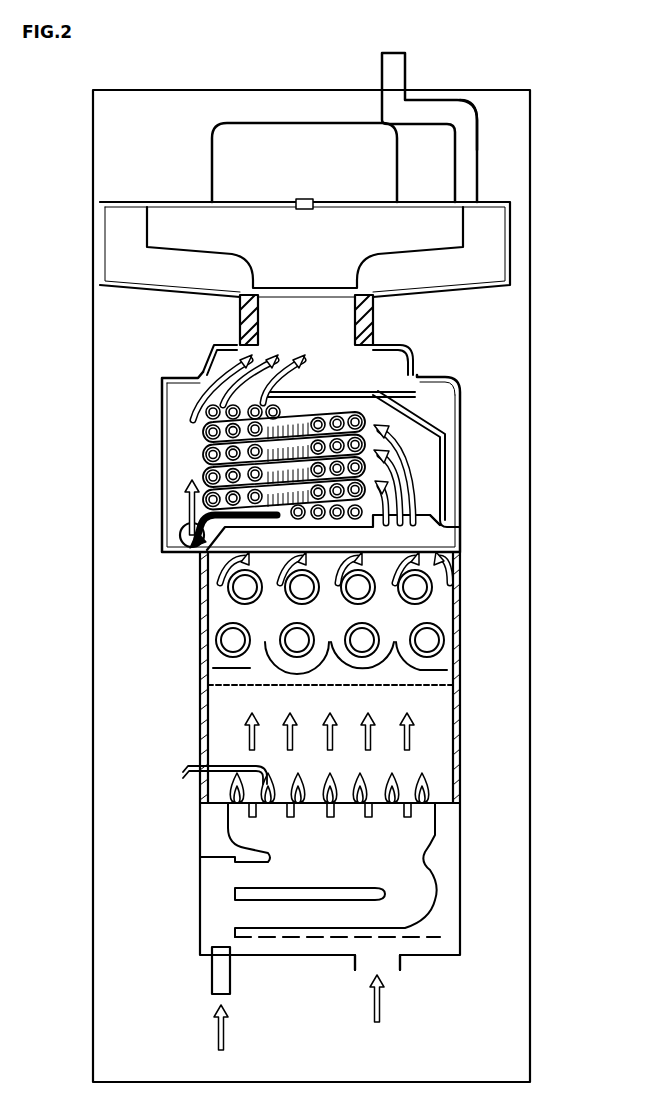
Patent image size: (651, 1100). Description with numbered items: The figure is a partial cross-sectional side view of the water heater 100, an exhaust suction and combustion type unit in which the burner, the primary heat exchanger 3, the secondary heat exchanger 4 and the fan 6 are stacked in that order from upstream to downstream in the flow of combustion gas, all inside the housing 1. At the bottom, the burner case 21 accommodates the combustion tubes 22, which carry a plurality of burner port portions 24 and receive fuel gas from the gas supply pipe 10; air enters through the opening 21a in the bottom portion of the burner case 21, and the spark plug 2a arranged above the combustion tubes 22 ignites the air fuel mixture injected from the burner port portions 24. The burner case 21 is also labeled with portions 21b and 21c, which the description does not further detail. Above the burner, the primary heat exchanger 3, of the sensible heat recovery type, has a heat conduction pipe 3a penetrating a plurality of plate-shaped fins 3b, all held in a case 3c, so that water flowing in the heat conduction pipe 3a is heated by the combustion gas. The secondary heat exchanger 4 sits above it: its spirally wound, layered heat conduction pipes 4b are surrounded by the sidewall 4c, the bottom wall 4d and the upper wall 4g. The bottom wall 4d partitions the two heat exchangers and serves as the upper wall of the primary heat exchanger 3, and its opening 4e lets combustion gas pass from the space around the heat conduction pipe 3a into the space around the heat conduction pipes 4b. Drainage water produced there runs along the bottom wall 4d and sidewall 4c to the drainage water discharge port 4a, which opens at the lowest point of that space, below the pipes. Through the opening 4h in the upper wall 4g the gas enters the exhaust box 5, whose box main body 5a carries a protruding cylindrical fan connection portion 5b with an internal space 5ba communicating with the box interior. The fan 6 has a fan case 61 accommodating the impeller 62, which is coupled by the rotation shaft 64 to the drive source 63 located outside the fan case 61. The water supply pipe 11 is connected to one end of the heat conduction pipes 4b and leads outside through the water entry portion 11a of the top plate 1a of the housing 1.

The water heater 100 is at (550, 208).
The housing 1 is at (530, 270).
The top plate 1a is at (469, 90).
The fan 6 is at (503, 197).
The fan case 61 is at (128, 200).
The impeller 62 is at (185, 228).
The drive source 63 is at (305, 147).
The rotation shaft 64 is at (302, 199).
The water supply pipe 11 is at (392, 52).
The water entry portion 11a is at (394, 90).
The exhaust box 5 is at (428, 357).
The box main body 5a is at (392, 340).
The fan connection portion 5b is at (237, 323).
The internal space 5ba is at (330, 322).
The secondary heat exchanger 4 is at (470, 415).
The drainage water discharge port 4a is at (185, 537).
The heat conduction pipes 4b is at (210, 458).
The sidewall 4c is at (457, 477).
The bottom wall 4d is at (446, 505).
The opening 4e is at (428, 533).
The upper wall 4g is at (327, 395).
The opening 4h is at (188, 413).
The primary heat exchanger 3 is at (470, 592).
The heat conduction pipe 3a is at (443, 636).
The plate-shaped fins 3b is at (443, 658).
The case 3c is at (456, 617).
The spark plug 2a is at (247, 770).
The burner port portions 24 is at (420, 808).
The combustion tubes 22 is at (435, 873).
The burner case 21 is at (460, 905).
The opening 21a is at (387, 967).
The air passage 21b is at (410, 940).
The partition 21c is at (435, 938).
The gas supply pipe 10 is at (215, 965).